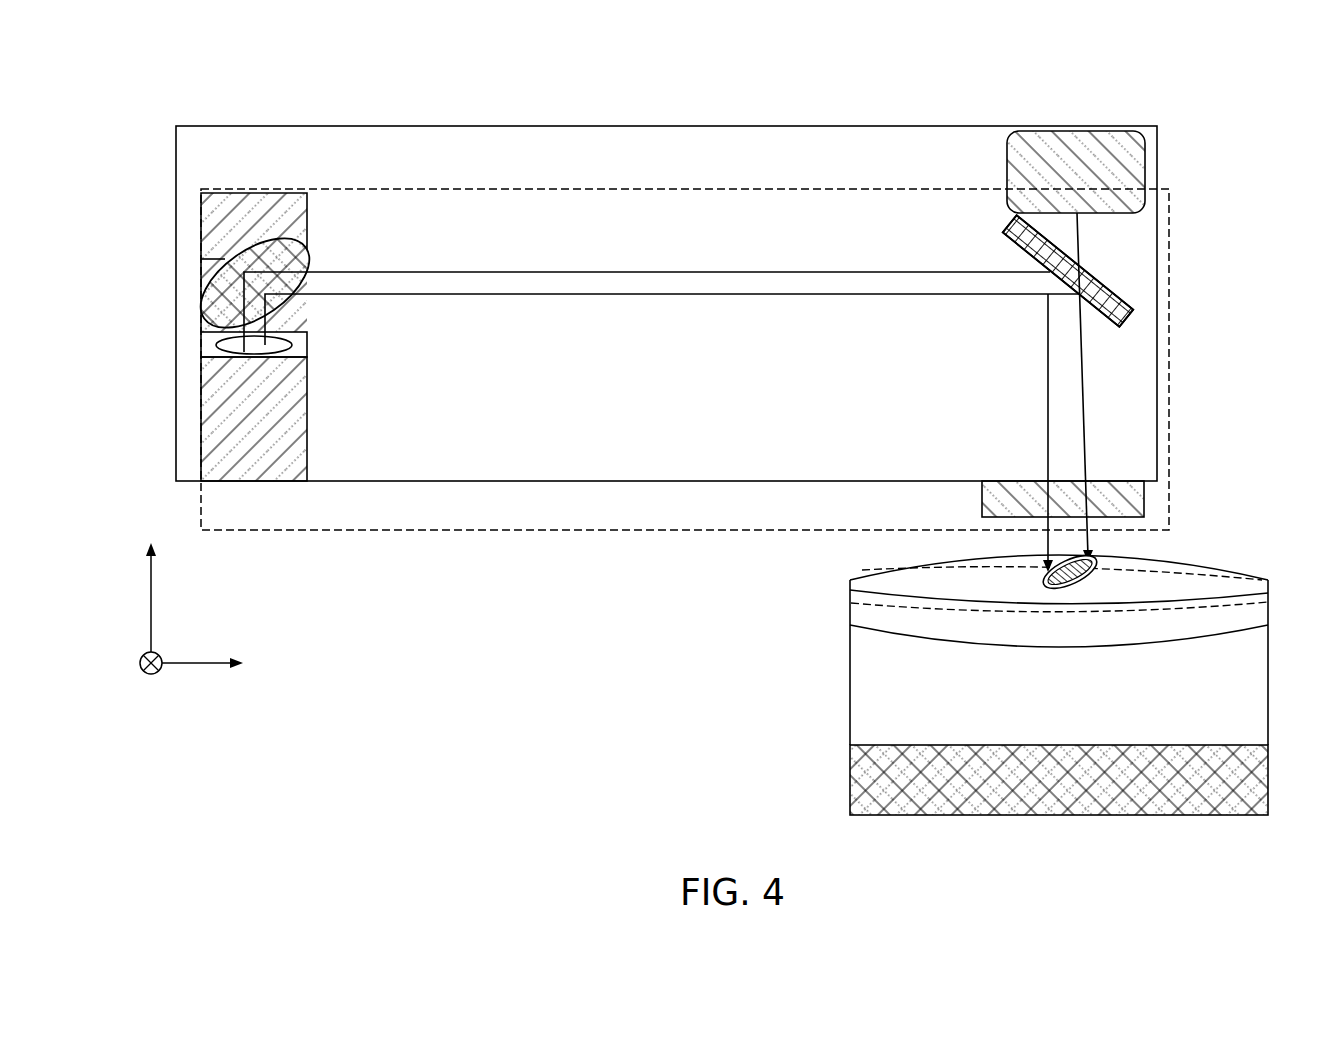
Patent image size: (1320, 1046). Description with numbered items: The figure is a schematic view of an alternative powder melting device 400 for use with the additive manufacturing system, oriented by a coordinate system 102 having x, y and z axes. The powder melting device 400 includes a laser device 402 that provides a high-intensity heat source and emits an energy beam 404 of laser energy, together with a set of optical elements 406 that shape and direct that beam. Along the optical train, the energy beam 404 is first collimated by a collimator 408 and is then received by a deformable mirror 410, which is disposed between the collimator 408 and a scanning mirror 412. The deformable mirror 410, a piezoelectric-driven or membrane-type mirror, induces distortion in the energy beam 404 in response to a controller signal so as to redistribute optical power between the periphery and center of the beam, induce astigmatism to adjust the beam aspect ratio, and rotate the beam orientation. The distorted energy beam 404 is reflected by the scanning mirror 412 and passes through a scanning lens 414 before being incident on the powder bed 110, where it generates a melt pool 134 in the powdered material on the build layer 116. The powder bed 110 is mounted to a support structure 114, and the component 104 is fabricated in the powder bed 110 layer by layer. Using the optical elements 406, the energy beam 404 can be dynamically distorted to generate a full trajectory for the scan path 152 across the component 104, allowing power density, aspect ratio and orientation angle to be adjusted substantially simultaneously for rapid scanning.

The powder melting device 400 is at (1150, 54).
The laser device 402 is at (302, 422).
The energy beam 404 is at (615, 286).
The optical elements 406 is at (1172, 313).
The collimator 408 is at (301, 341).
The deformable mirror 410 is at (258, 200).
The scanning mirror 412 is at (1098, 281).
The scanning lens 414 is at (1147, 500).
The coordinate system 102 is at (216, 600).
The component 104 is at (868, 612).
The powder bed 110 is at (867, 680).
The support structure 114 is at (868, 788).
The build layer 116 is at (1207, 590).
The melt pool 134 is at (1050, 584).
The scan path 152 is at (900, 570).